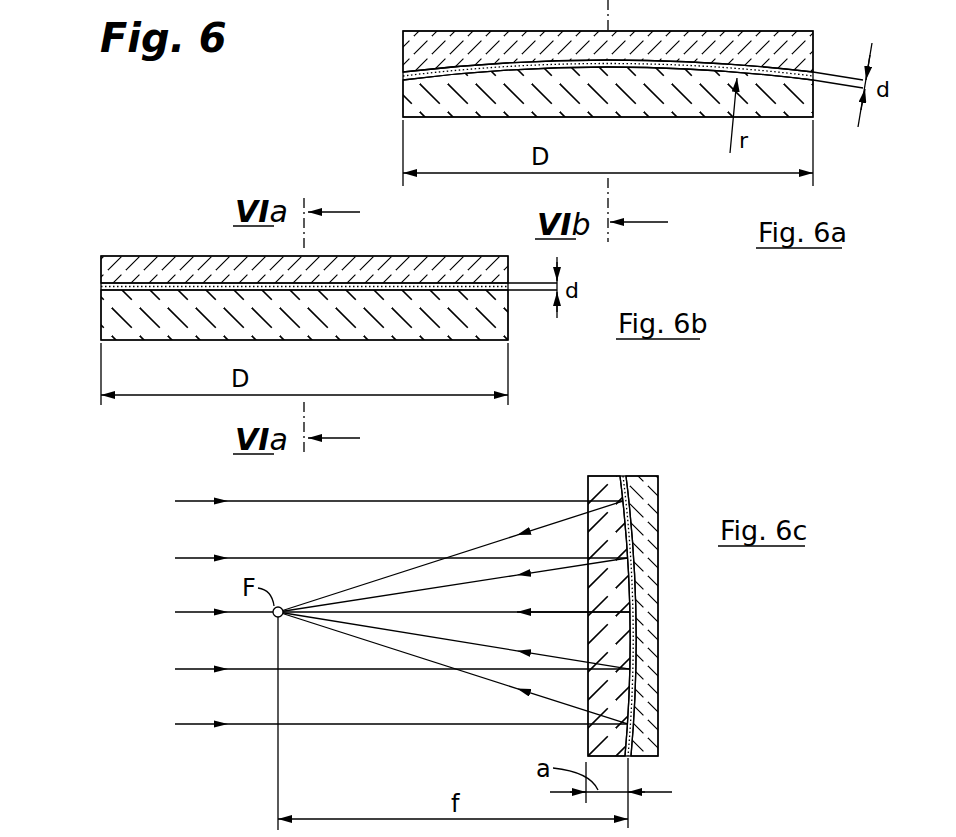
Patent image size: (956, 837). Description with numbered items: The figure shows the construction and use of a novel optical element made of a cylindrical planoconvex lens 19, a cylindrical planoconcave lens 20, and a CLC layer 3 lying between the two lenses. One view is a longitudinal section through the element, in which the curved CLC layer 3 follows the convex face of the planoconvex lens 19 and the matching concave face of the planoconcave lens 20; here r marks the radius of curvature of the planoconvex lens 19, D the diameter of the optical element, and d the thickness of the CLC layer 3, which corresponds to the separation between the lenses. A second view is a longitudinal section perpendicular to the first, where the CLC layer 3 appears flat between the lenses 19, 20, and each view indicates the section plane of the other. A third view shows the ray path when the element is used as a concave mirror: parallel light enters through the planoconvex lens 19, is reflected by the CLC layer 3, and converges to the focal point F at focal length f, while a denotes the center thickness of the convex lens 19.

In FIG. 6A, the CLC layer 3 is at (763, 72).
In FIG. 6B, the CLC layer 3 is at (436, 283).
In FIG. 6C, the CLC layer 3 is at (624, 490).
In FIG. 6A, the cylindrical planoconvex lens 19 is at (410, 98).
In FIG. 6B, the cylindrical planoconvex lens 19 is at (110, 325).
In FIG. 6C, the cylindrical planoconvex lens 19 is at (590, 492).
In FIG. 6A, the cylindrical planoconcave lens 20 is at (405, 42).
In FIG. 6B, the cylindrical planoconcave lens 20 is at (108, 266).
In FIG. 6C, the cylindrical planoconcave lens 20 is at (655, 492).